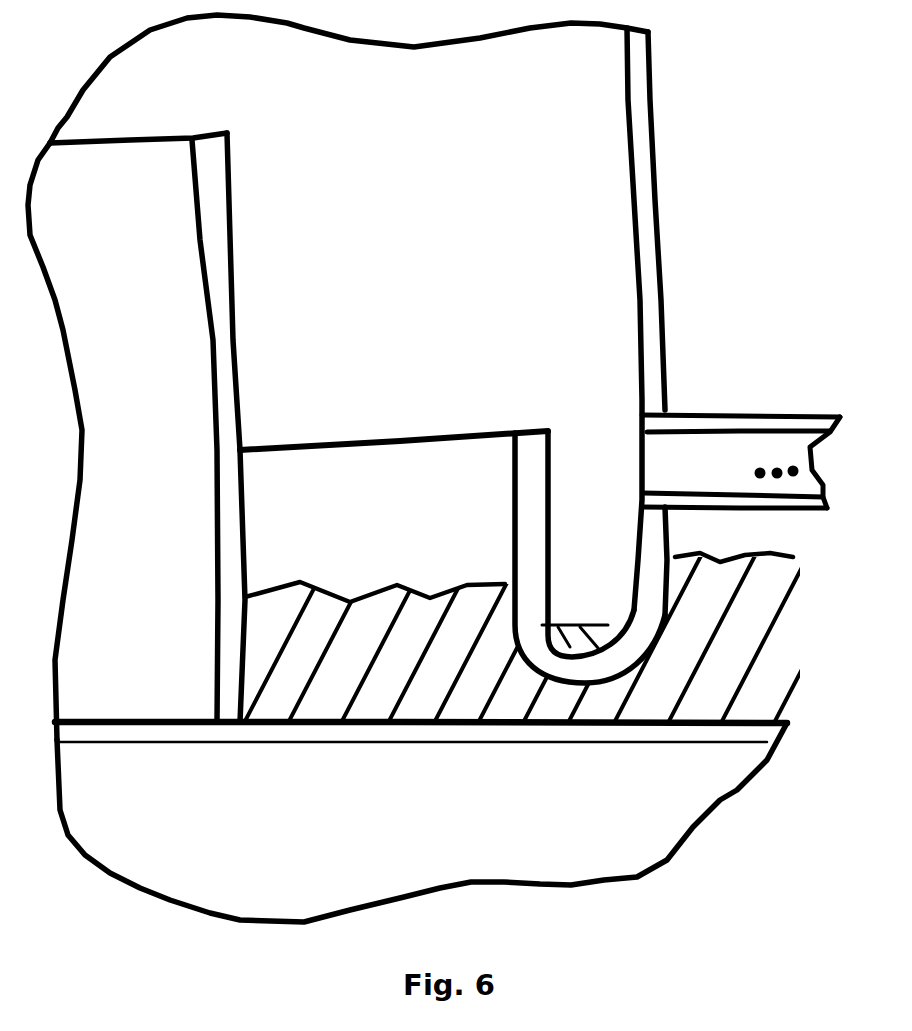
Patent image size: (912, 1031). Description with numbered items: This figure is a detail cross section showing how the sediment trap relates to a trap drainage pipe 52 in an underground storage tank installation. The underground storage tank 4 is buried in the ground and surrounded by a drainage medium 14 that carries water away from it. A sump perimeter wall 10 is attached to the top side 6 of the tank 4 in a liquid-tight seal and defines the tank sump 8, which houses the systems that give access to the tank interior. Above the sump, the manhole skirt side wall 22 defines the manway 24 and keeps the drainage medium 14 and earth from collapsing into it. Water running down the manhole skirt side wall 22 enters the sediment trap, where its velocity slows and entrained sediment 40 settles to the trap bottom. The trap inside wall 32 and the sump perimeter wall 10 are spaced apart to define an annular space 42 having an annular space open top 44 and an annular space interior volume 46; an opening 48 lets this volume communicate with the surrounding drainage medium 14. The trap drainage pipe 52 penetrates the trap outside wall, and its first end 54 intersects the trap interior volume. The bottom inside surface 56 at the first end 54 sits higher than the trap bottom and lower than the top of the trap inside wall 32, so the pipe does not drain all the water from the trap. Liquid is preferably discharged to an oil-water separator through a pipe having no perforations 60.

The underground storage tank 4 is at (376, 812).
The top side of tank 6 is at (180, 727).
The tank sump 8 is at (108, 243).
The sump perimeter wall 10 is at (213, 380).
The drainage medium 14 is at (713, 687).
The manhole skirt side wall 22 is at (655, 233).
The manway 24 is at (402, 231).
The trap inside wall 32 is at (550, 437).
The sediment 40 is at (577, 647).
The annular space 42 is at (323, 490).
The annular space open top 44 is at (313, 440).
The annular space interior volume 46 is at (283, 528).
The opening 48 is at (450, 745).
The trap drainage pipe 52 is at (763, 410).
The first end of trap drainage pipe 54 is at (667, 390).
The bottom inside surface of trap drainage pipe 56 is at (652, 492).
The perforations 60 is at (770, 463).